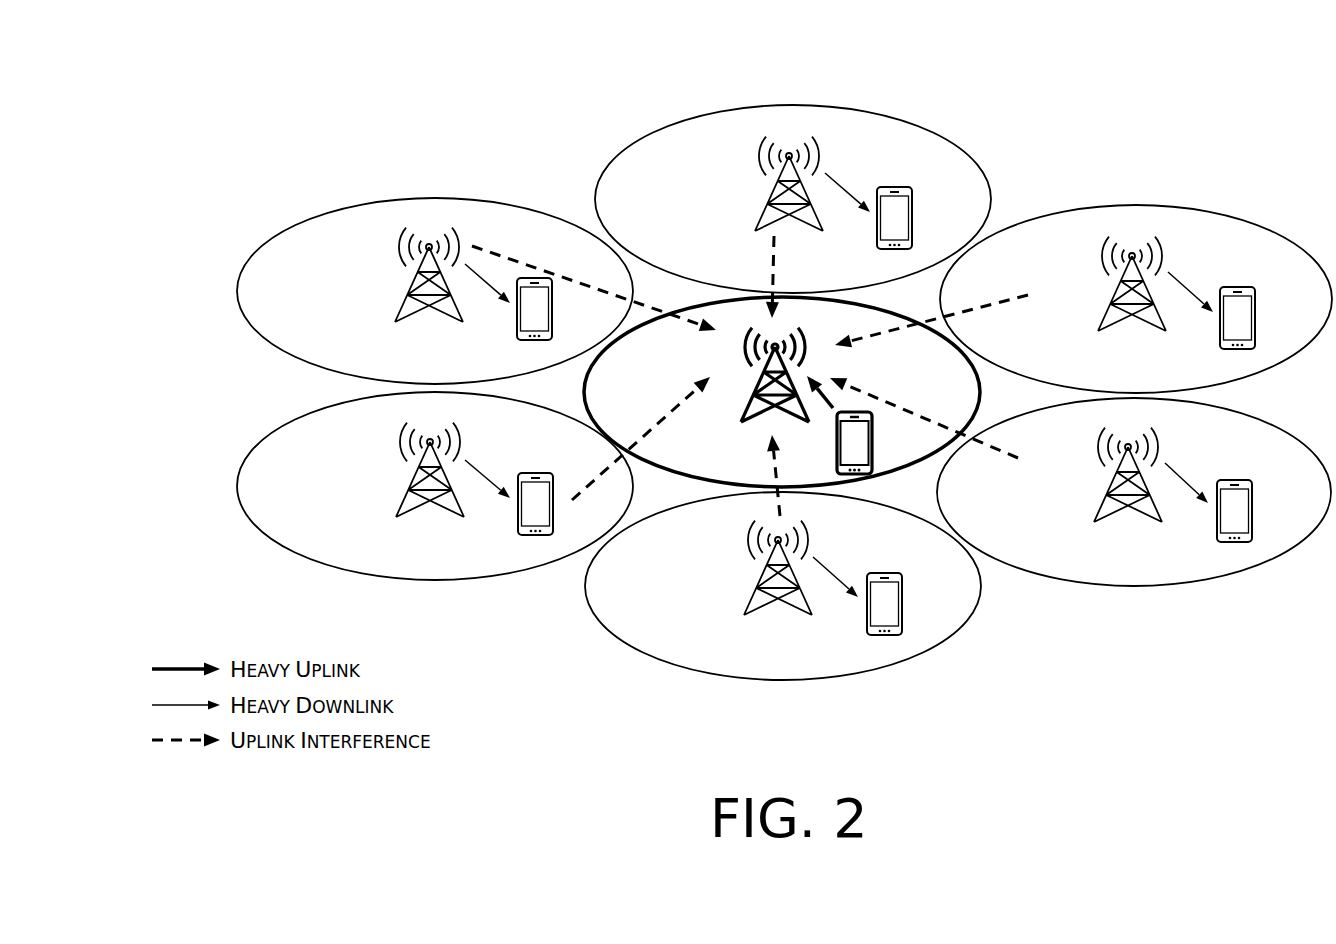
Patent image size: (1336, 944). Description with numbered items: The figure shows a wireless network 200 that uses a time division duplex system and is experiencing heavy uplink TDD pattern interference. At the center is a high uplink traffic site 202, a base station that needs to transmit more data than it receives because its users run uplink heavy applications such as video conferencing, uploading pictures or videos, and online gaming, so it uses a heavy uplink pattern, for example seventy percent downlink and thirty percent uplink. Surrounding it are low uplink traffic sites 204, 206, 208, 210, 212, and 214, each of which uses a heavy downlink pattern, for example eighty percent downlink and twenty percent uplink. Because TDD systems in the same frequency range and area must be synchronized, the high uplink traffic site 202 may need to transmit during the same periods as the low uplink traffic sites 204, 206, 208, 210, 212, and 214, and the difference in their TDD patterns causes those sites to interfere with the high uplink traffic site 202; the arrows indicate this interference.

The network 200 is at (178, 124).
The high uplink traffic site 202 is at (704, 312).
The low uplink traffic site 204 is at (350, 205).
The low uplink traffic site 206 is at (300, 418).
The low uplink traffic site 208 is at (855, 673).
The low uplink traffic site 210 is at (1235, 574).
The low uplink traffic site 212 is at (1233, 212).
The low uplink traffic site 214 is at (848, 108).